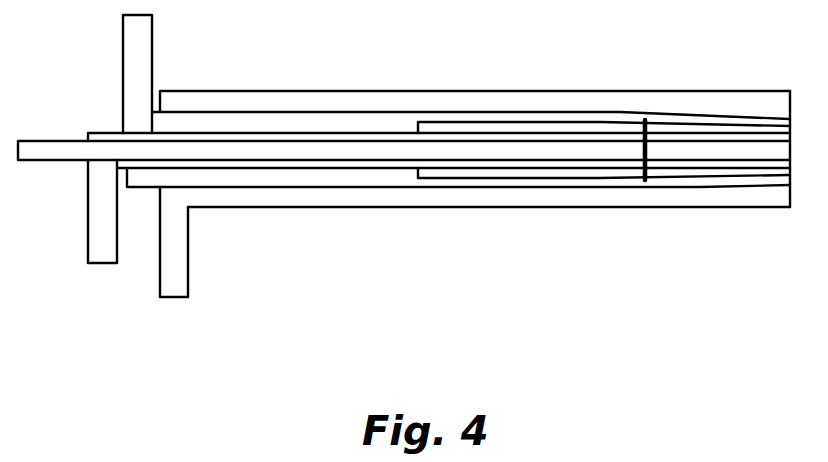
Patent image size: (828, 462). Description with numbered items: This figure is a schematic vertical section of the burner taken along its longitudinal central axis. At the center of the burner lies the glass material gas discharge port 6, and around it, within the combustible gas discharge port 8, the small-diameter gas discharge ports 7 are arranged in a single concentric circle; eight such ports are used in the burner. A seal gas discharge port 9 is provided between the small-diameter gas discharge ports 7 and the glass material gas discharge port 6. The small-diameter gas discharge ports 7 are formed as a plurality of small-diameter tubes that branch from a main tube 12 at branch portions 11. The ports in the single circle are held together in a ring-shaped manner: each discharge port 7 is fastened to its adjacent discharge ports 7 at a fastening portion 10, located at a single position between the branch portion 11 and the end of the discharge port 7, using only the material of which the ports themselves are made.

The glass material gas discharge port 6 is at (263, 153).
The small-diameter gas discharge ports 7 is at (461, 183).
The combustible gas discharge port 8 is at (386, 198).
The seal gas discharge port 9 is at (343, 165).
The fastening portion 10 is at (643, 153).
The branch portions 11 is at (417, 130).
The main tube 12 is at (255, 128).